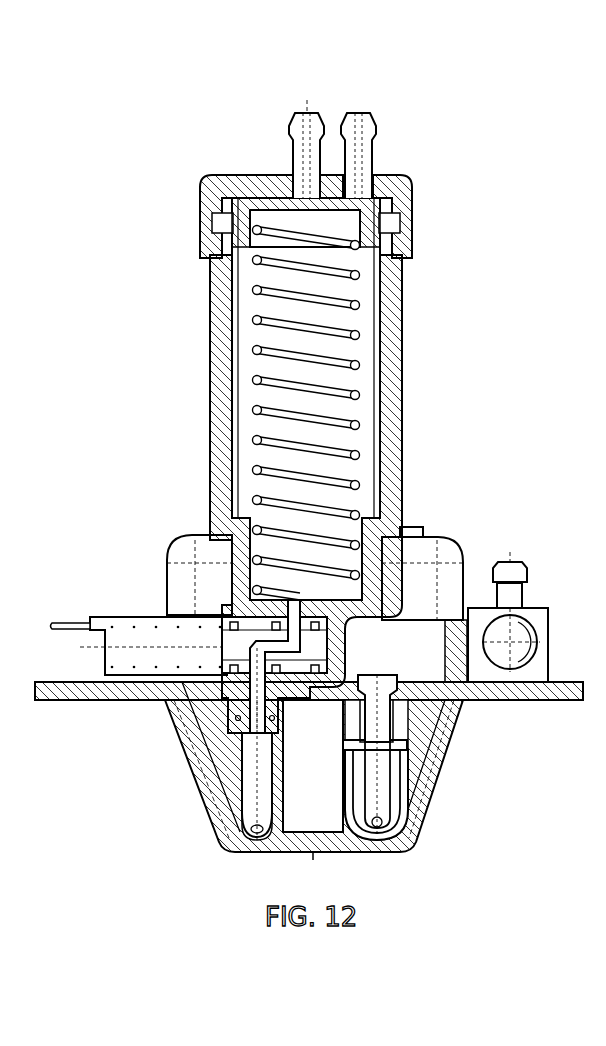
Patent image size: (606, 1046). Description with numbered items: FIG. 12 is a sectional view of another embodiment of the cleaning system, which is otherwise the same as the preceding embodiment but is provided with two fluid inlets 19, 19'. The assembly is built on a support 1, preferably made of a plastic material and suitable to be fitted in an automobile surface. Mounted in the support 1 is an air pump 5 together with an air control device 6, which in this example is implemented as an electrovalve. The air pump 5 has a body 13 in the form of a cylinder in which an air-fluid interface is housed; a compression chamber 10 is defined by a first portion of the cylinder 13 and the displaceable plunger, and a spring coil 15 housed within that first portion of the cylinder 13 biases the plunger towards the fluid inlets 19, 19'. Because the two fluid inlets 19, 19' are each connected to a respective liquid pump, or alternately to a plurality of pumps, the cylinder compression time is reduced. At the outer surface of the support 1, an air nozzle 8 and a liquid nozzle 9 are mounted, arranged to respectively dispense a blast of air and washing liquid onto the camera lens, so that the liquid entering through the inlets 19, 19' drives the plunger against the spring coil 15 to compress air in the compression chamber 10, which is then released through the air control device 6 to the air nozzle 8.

The support 1 is at (447, 760).
The air pump 5 is at (200, 217).
The air control device 6 is at (128, 628).
The air nozzle 8 is at (252, 827).
The liquid nozzle 9 is at (387, 830).
The compression chamber 10 is at (250, 482).
The body 13 is at (210, 335).
The spring coil 15 is at (360, 385).
The fluid inlet 19 is at (416, 139).
The fluid inlet 19' is at (243, 132).